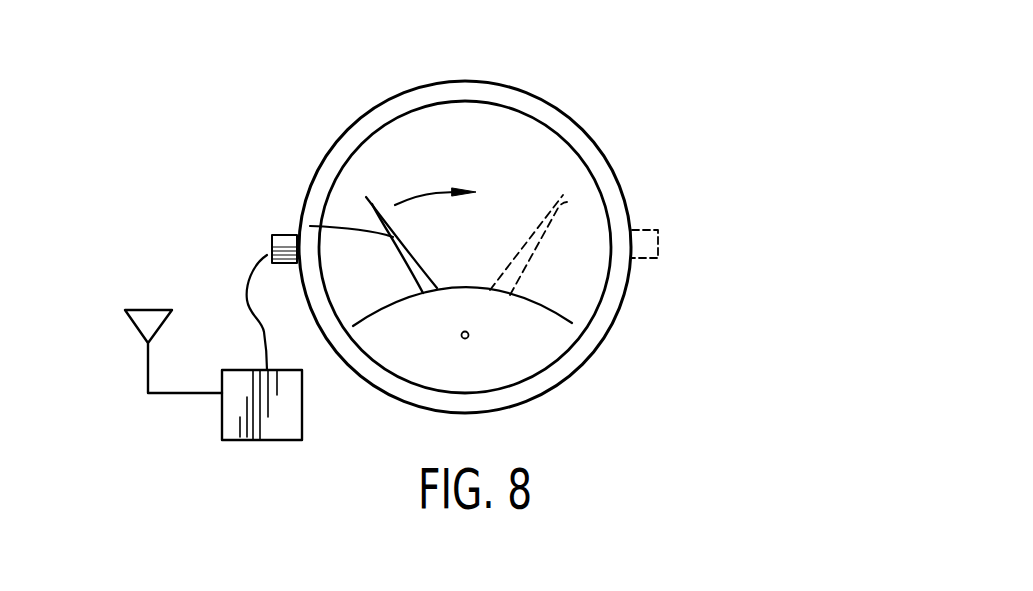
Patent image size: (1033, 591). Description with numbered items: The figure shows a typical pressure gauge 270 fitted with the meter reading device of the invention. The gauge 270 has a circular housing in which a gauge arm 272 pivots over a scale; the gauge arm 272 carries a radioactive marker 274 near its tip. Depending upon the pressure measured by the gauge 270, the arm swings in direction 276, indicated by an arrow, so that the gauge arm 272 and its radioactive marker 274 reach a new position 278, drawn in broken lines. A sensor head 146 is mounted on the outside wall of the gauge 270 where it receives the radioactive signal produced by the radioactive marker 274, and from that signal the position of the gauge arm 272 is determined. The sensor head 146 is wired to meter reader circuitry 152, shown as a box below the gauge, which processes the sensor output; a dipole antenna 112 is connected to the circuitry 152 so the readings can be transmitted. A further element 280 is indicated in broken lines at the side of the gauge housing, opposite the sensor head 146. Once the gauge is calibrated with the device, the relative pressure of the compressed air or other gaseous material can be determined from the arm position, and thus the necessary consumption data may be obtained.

The antenna 112 is at (128, 323).
The sensor head 146 is at (270, 243).
The meter reader circuitry 152 is at (220, 423).
The pressure gauge 270 is at (593, 127).
The gauge arm 272 is at (372, 204).
The radioactive marker 274 is at (310, 226).
The direction 276 is at (430, 193).
The new position 278 is at (567, 202).
The external connector 280 is at (658, 245).